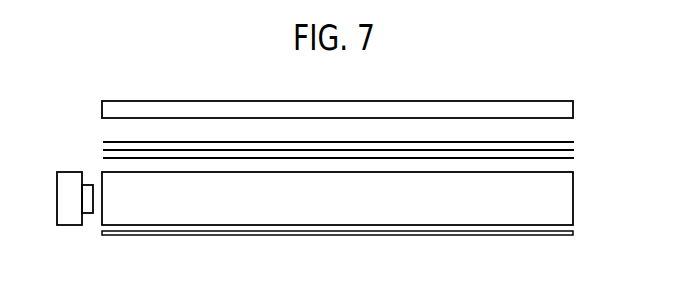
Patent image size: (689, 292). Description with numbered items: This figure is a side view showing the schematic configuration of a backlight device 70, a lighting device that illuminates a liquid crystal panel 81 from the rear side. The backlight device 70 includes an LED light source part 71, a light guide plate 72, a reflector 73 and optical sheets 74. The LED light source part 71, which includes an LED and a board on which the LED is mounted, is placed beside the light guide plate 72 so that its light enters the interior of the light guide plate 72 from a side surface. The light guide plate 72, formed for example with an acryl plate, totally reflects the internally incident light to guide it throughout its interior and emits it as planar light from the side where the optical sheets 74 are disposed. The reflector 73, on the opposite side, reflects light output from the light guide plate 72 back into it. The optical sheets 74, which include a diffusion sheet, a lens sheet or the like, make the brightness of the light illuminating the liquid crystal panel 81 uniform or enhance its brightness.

The backlight device 70 is at (87, 157).
The LED light source part 71 is at (73, 226).
The light guide plate 72 is at (573, 188).
The reflector 73 is at (573, 232).
The optical sheets 74 is at (587, 153).
The liquid crystal panel 81 is at (573, 103).